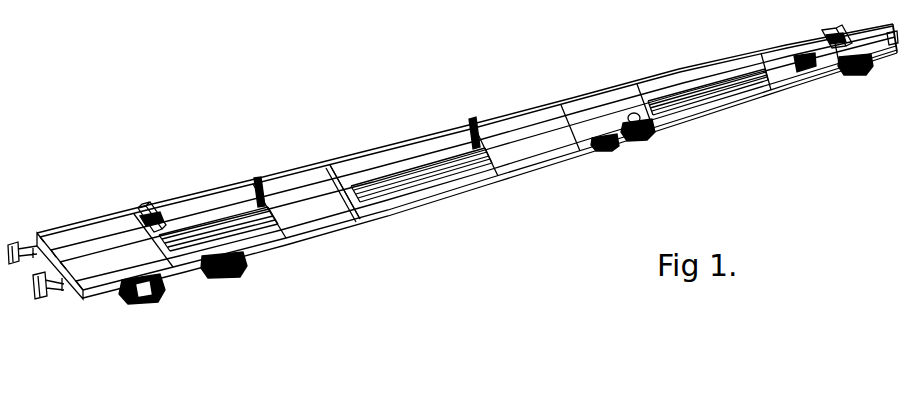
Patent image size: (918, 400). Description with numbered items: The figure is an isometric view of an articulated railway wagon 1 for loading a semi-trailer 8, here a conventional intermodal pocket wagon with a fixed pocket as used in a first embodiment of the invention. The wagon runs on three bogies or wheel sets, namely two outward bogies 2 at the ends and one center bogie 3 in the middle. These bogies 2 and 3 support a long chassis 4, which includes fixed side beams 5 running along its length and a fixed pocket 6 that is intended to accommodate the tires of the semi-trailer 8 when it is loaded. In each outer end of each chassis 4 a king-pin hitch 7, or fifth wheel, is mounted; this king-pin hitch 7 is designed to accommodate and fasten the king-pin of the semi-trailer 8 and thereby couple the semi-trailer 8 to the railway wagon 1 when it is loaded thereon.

The articulated railway wagon 1 is at (547, 102).
The outward bogie 2 is at (163, 287).
The center bogie 3 is at (603, 142).
The chassis 4 is at (333, 153).
The fixed side beams 5 is at (283, 170).
The fixed pocket 6 is at (407, 162).
The king-pin hitch 7 is at (148, 200).
The semi-trailer 8 is at (337, 240).